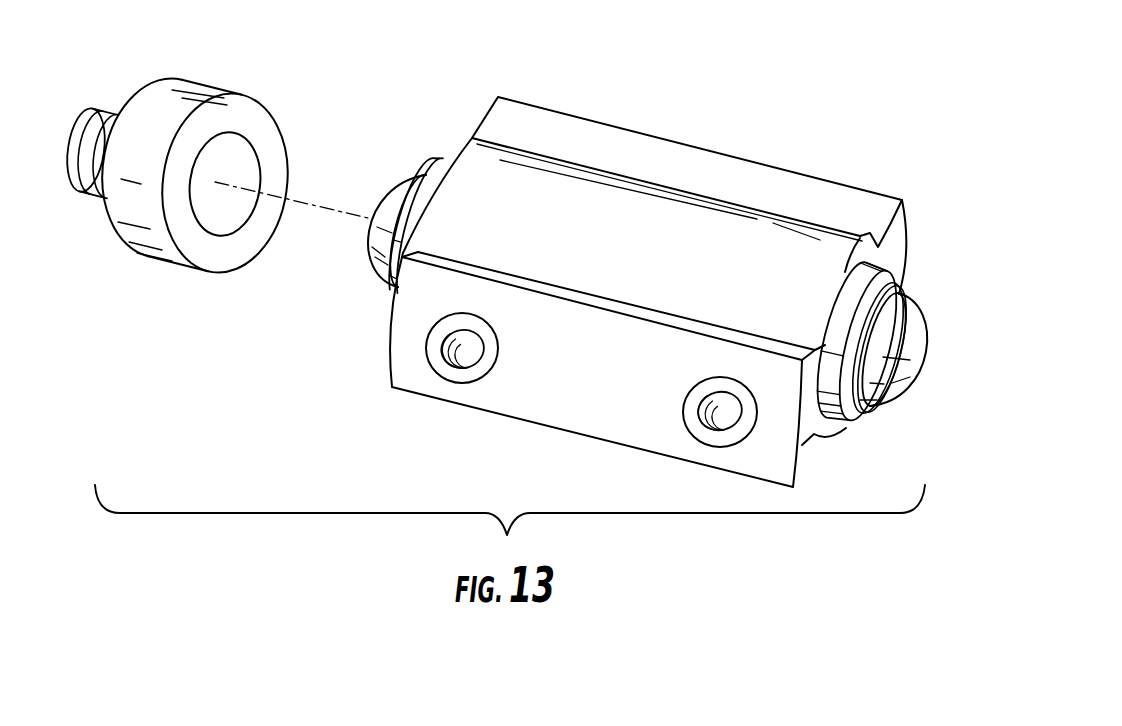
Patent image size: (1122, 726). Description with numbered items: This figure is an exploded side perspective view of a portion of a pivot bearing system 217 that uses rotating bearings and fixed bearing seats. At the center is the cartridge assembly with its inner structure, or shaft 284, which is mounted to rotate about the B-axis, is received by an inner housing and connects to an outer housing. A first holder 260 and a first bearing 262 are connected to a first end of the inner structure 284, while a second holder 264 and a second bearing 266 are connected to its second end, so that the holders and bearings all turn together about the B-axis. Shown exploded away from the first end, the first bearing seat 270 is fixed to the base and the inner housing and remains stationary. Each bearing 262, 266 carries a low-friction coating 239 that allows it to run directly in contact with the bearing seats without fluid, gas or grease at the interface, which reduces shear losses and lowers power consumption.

The pivot bearing system 217 is at (643, 269).
The low-friction coating 239 is at (367, 253).
The first holder 260 is at (436, 165).
The first bearing 262 is at (378, 200).
The second holder 264 is at (848, 420).
The second bearing 266 is at (893, 400).
The first bearing seat 270 is at (268, 110).
The inner structure 284 is at (773, 166).